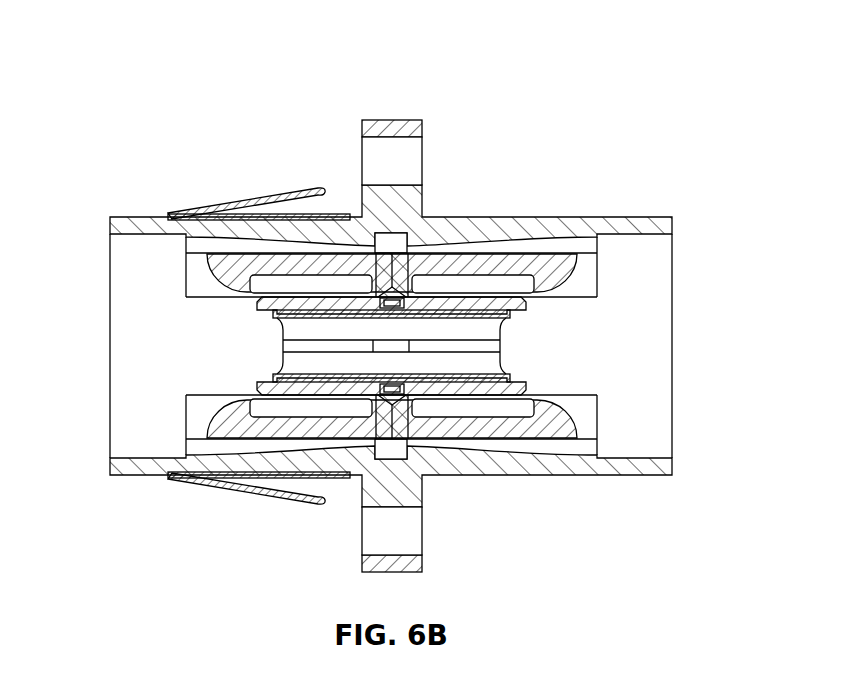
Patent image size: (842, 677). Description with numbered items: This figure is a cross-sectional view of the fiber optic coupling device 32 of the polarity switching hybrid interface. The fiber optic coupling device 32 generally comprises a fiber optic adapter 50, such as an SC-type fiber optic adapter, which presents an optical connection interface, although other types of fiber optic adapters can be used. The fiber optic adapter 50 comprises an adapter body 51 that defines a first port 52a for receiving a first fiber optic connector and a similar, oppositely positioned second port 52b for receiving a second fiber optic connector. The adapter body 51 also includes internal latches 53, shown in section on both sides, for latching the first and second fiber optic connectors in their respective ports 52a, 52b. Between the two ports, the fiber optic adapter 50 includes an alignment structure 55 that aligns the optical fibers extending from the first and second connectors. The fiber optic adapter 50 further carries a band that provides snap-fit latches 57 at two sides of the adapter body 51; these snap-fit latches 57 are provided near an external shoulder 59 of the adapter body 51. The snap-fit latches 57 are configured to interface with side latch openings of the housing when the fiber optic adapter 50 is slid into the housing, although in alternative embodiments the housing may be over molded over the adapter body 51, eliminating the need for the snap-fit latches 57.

The fiber optic coupling device 32 is at (391, 314).
The fiber optic adapter 50 is at (391, 314).
The adapter body 51 is at (625, 216).
The first port 52a is at (123, 470).
The second port 52b is at (610, 457).
The internal latches 53 is at (580, 268).
The alignment structure 55 is at (482, 323).
The snap-fit latches 57 is at (273, 192).
The external shoulder 59 is at (423, 130).